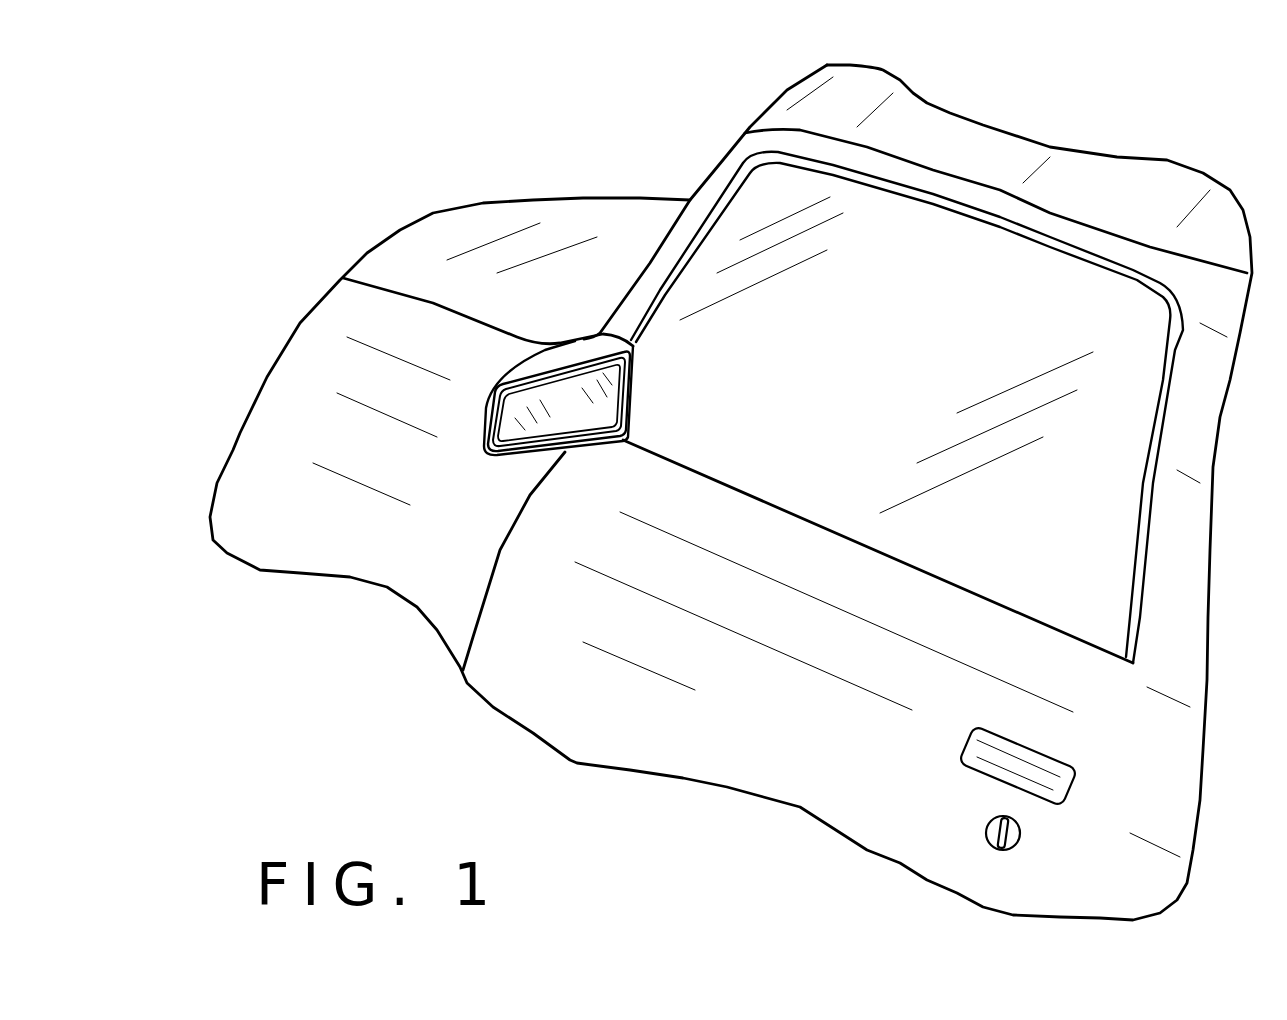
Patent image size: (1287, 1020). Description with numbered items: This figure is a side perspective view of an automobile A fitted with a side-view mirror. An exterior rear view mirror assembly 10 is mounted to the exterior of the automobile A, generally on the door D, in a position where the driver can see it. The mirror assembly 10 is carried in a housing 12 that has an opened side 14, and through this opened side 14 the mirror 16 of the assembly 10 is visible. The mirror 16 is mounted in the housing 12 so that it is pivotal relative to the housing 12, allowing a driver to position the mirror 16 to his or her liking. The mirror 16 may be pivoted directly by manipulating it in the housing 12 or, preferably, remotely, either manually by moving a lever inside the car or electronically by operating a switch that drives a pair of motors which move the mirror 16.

The automobile A is at (1030, 115).
The door D is at (767, 727).
The exterior rear view mirror assembly 10 is at (581, 438).
The housing 12 is at (545, 356).
The opened side 14 is at (491, 433).
The mirror 16 is at (574, 418).